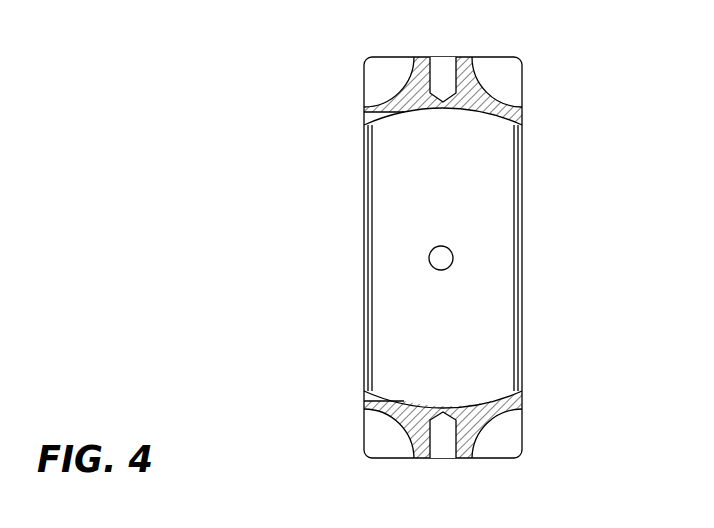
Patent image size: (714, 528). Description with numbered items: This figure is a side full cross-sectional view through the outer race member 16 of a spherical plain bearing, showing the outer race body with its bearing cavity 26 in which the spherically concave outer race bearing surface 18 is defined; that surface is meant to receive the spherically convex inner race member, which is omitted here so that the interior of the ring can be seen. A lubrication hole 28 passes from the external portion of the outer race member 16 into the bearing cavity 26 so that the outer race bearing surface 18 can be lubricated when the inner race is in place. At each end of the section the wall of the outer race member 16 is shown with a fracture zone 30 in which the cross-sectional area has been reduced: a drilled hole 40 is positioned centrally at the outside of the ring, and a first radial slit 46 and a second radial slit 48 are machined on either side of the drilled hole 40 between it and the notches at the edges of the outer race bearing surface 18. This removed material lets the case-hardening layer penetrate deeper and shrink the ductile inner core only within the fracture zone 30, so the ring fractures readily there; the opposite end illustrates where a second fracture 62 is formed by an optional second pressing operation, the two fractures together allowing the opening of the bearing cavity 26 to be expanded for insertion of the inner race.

The outer race member 16 is at (520, 262).
The outer race bearing surface 18 is at (412, 114).
The bearing cavity 26 is at (487, 337).
The lubrication hole 28 is at (450, 248).
The fracture zone 30 is at (390, 58).
The drilled hole 40 is at (443, 68).
The first radial slit 46 is at (373, 81).
The second radial slit 48 is at (500, 78).
The second fracture 62 is at (467, 460).